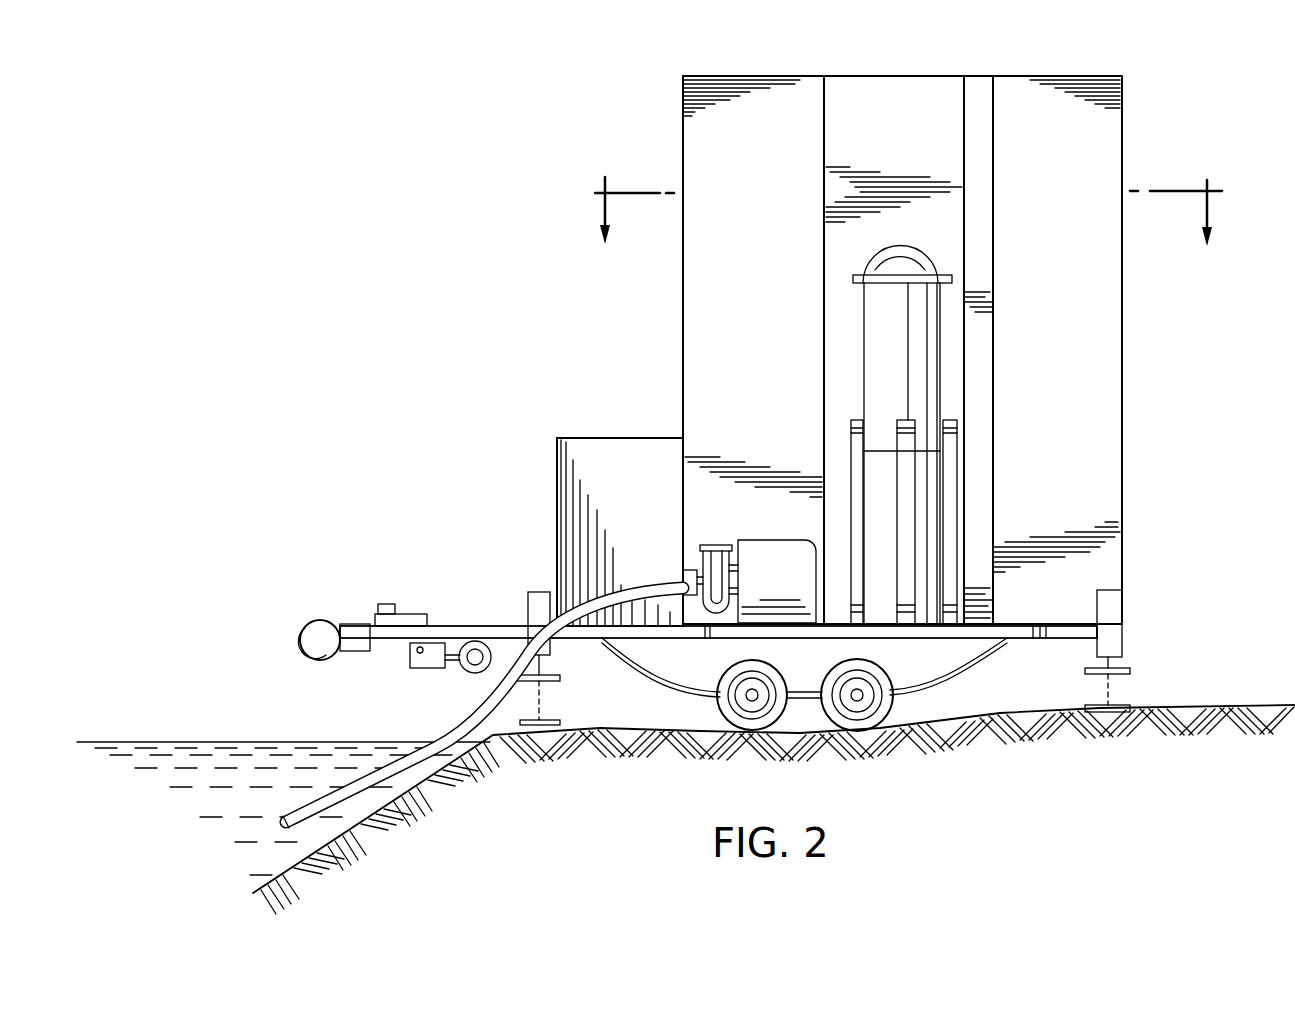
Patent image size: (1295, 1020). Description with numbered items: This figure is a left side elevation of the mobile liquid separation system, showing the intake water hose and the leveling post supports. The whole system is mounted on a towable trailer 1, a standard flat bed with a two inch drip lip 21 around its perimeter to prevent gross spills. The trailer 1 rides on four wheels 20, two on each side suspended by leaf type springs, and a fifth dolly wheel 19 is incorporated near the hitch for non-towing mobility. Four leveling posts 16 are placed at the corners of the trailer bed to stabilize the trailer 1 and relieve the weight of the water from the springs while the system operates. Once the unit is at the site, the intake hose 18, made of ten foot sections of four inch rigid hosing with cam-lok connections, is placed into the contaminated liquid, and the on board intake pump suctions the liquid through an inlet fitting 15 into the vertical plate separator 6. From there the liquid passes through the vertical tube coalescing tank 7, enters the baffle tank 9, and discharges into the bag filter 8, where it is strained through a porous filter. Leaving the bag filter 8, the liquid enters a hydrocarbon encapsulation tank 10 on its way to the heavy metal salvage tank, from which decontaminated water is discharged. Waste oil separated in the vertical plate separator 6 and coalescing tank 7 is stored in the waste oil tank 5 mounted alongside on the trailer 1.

The trailer 1 is at (902, 211).
The waste oil tank 5 is at (585, 455).
The vertical plate separator 6 is at (703, 148).
The vertical tube coalescing tank 7 is at (882, 100).
The bag filter 8 is at (930, 325).
The baffle tank 9 is at (978, 105).
The hydrocarbon encapsulation tank 10 is at (1080, 125).
The inlet valve 15 is at (682, 575).
The leveling post 16 is at (1112, 670).
The intake hose 18 is at (455, 694).
The dolly wheel 19 is at (410, 662).
The wheels 20 is at (877, 731).
The drip lip 21 is at (1060, 624).